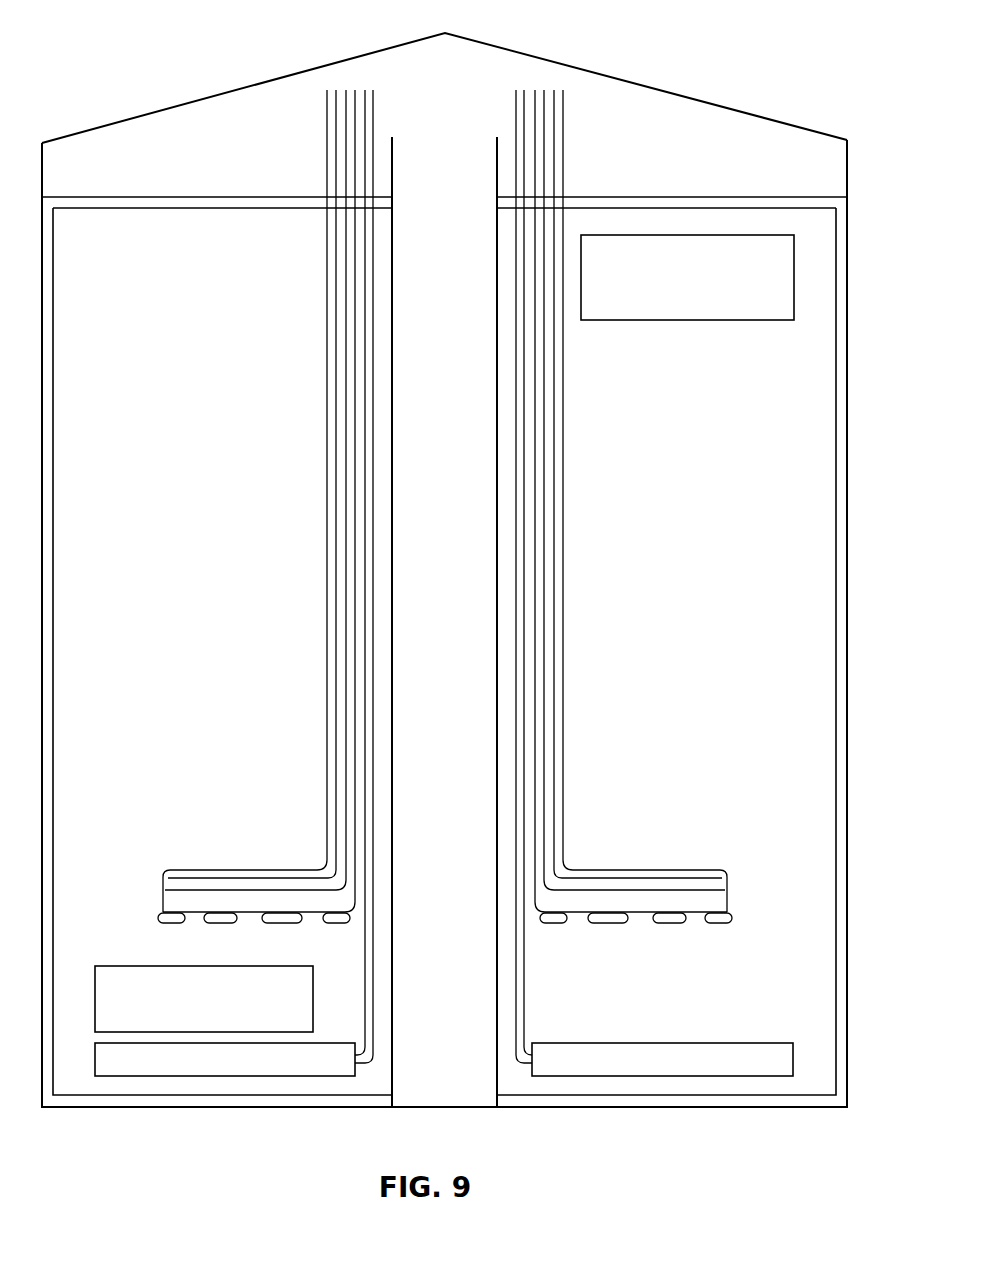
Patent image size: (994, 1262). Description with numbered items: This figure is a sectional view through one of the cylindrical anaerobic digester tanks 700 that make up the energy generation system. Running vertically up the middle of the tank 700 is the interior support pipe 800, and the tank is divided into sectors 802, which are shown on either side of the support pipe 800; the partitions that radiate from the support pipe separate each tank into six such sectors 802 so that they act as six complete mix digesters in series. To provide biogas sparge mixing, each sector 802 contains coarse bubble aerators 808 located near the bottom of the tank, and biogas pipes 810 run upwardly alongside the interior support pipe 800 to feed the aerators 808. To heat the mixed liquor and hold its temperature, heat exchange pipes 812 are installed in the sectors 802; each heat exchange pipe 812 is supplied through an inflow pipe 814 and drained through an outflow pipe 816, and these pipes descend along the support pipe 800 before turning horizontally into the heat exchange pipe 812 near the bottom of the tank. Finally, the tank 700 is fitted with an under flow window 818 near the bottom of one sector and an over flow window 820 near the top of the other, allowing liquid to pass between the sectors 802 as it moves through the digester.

The anaerobic digester tank 700 is at (652, 88).
The interior support pipe 800 is at (444, 622).
The sector 802 is at (183, 900).
The coarse bubble aerator 808 is at (163, 1077).
The biogas pipe 810 is at (369, 88).
The heat exchange pipe 812 is at (718, 883).
The inflow pipe 814 is at (350, 88).
The outflow pipe 816 is at (328, 88).
The under flow window 818 is at (135, 965).
The over flow window 820 is at (725, 320).